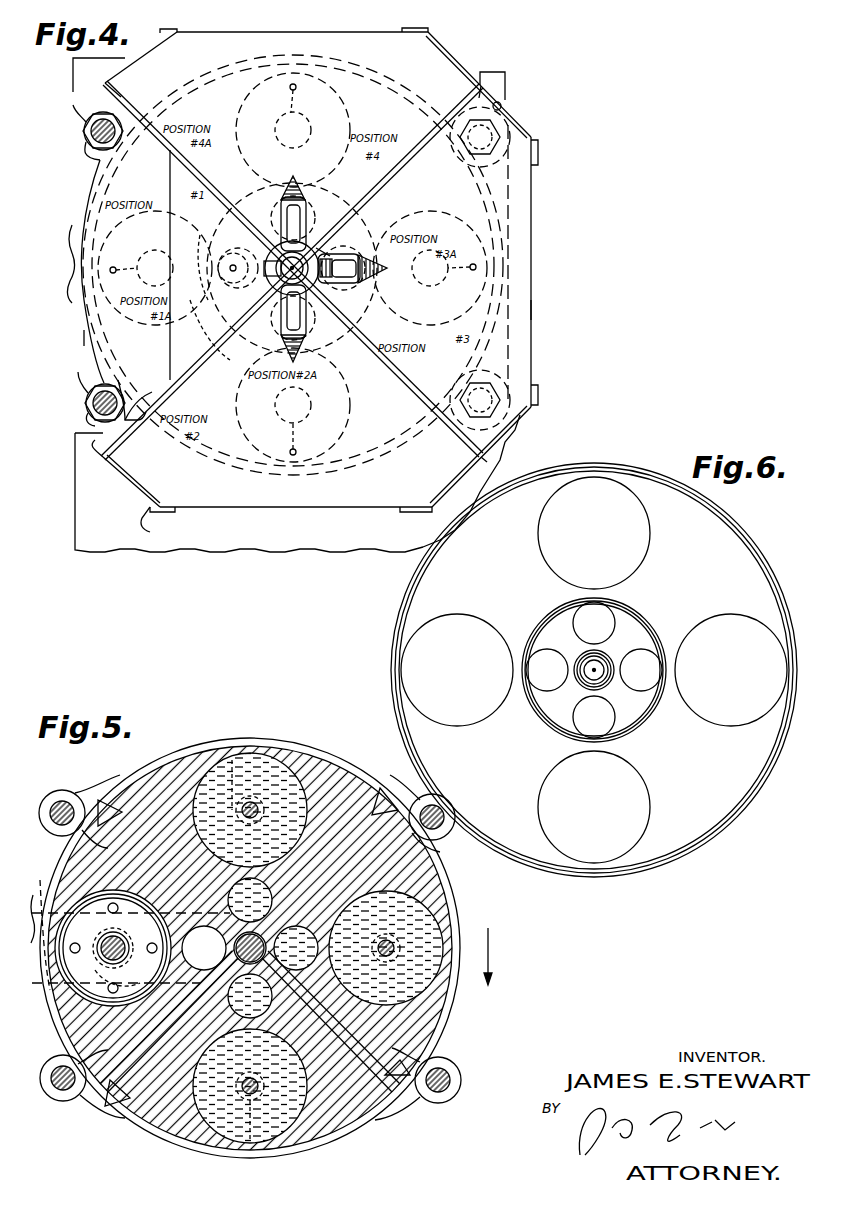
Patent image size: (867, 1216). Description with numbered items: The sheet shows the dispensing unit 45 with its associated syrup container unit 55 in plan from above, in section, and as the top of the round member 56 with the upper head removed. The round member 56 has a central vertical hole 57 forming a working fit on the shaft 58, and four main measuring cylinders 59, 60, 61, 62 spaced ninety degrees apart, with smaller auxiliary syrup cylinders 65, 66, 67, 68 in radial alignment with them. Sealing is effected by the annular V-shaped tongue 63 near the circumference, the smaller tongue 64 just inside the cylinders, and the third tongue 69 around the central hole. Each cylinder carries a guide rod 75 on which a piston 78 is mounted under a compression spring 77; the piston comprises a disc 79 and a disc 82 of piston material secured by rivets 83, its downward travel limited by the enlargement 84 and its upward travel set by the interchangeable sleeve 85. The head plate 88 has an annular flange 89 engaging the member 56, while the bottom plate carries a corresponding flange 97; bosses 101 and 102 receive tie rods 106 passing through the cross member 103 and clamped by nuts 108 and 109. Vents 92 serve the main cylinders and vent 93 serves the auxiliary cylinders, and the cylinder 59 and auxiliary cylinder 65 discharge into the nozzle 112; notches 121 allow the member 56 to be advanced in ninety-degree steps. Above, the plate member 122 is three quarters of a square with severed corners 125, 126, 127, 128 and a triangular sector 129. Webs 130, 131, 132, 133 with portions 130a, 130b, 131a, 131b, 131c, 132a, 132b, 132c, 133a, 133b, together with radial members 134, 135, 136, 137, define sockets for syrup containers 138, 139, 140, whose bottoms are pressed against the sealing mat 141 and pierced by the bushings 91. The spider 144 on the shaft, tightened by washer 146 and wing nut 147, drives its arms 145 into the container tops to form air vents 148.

In FIG. 4, the dispensing unit 45 is at (82, 338).
In FIG. 5, the dispensing unit 45 is at (462, 995).
In FIG. 4, the syrup container unit 55 is at (533, 312).
In FIG. 4, the round member 56 is at (230, 50).
In FIG. 6, the round member 56 is at (410, 603).
In FIG. 5, the round member 56 is at (190, 750).
In FIG. 4, the central vertical hole 57 is at (292, 268).
In FIG. 6, the central vertical hole 57 is at (601, 666).
In FIG. 5, the central vertical hole 57 is at (250, 948).
In FIG. 4, the shaft 58 is at (282, 220).
In FIG. 5, the shaft 58 is at (392, 1095).
In FIG. 4, the main measuring cylinder 59 is at (148, 330).
In FIG. 6, the main measuring cylinder 59 is at (463, 725).
In FIG. 5, the main measuring cylinder 59 is at (75, 898).
In FIG. 4, the main measuring cylinder 60 is at (350, 416).
In FIG. 6, the main measuring cylinder 60 is at (645, 828).
In FIG. 5, the main measuring cylinder 60 is at (275, 1130).
In FIG. 4, the main measuring cylinder 61 is at (445, 216).
In FIG. 6, the main measuring cylinder 61 is at (735, 725).
In FIG. 5, the main measuring cylinder 61 is at (425, 912).
In FIG. 4, the main measuring cylinder 62 is at (350, 120).
In FIG. 6, the main measuring cylinder 62 is at (649, 540).
In FIG. 5, the main measuring cylinder 62 is at (252, 800).
In FIG. 6, the annular V-shaped tongue 63 is at (618, 468).
In FIG. 6, the second annular V-shaped tongue 64 is at (560, 602).
In FIG. 4, the auxiliary syrup cylinder 65 is at (236, 248).
In FIG. 6, the auxiliary syrup cylinder 65 is at (540, 662).
In FIG. 5, the auxiliary syrup cylinder 65 is at (204, 948).
In FIG. 4, the auxiliary syrup cylinder 66 is at (268, 338).
In FIG. 6, the auxiliary syrup cylinder 66 is at (582, 725).
In FIG. 5, the auxiliary syrup cylinder 66 is at (262, 1012).
In FIG. 4, the auxiliary syrup cylinder 67 is at (345, 286).
In FIG. 6, the auxiliary syrup cylinder 67 is at (643, 692).
In FIG. 5, the auxiliary syrup cylinder 67 is at (318, 948).
In FIG. 4, the auxiliary syrup cylinder 68 is at (316, 210).
In FIG. 6, the auxiliary syrup cylinder 68 is at (607, 614).
In FIG. 5, the auxiliary syrup cylinder 68 is at (200, 860).
In FIG. 6, the third annular V-shaped tongue 69 is at (583, 681).
In FIG. 5, the guide rod 75 is at (252, 808).
In FIG. 5, the compression spring 77 is at (148, 984).
In FIG. 5, the piston 78 is at (113, 948).
In FIG. 5, the disc 79 is at (95, 998).
In FIG. 5, the disc of piston material 82 is at (140, 1000).
In FIG. 5, the rivets 83 is at (111, 948).
In FIG. 5, the enlargement 84 is at (232, 760).
In FIG. 5, the sleeve 85 is at (118, 940).
In FIG. 4, the head plate 88 is at (100, 190).
In FIG. 4, the annular flange 89 is at (82, 310).
In FIG. 4, the special bushings 91 is at (292, 255).
In FIG. 4, the vent 92 is at (293, 269).
In FIG. 4, the vent 93 is at (222, 300).
In FIG. 5, the annular flange 97 is at (150, 1138).
In FIG. 4, the bosses 101 is at (82, 148).
In FIG. 5, the bosses 102 is at (72, 800).
In FIG. 4, the cross member 103 is at (75, 552).
In FIG. 4, the tie rods 106 is at (92, 120).
In FIG. 5, the tie rods 106 is at (55, 803).
In FIG. 4, the nuts 108 is at (525, 180).
In FIG. 4, the nuts 109 is at (92, 130).
In FIG. 4, the discharge nozzle 112 is at (80, 225).
In FIG. 5, the discharge nozzle 112 is at (34, 910).
In FIG. 5, the notches 121 is at (105, 805).
In FIG. 4, the plate member 122 is at (150, 395).
In FIG. 4, the severed corner 125 is at (145, 515).
In FIG. 4, the severed corner 126 is at (515, 440).
In FIG. 4, the severed corner 127 is at (502, 102).
In FIG. 4, the severed corner 128 is at (118, 72).
In FIG. 4, the triangular sector 129 is at (172, 182).
In FIG. 4, the vertical web 130 is at (120, 488).
In FIG. 4, the radial portion 130a is at (97, 462).
In FIG. 4, the angular portion 130b is at (165, 512).
In FIG. 4, the vertical web 131 is at (452, 490).
In FIG. 4, the midpoint extension 131a is at (472, 458).
In FIG. 4, the angular portion 131b is at (410, 512).
In FIG. 4, the angular portion 131c is at (538, 395).
In FIG. 4, the web 132 is at (478, 70).
In FIG. 4, the midpoint radial extension 132a is at (470, 92).
In FIG. 4, the angular portion 132b is at (402, 30).
In FIG. 4, the angular extension 132c is at (538, 158).
In FIG. 4, the web 133 is at (140, 55).
In FIG. 4, the radial portion 133a is at (118, 90).
In FIG. 4, the angular portion 133b is at (160, 30).
In FIG. 4, the radial member 134 is at (280, 318).
In FIG. 4, the radial member 135 is at (308, 318).
In FIG. 4, the radial member 136 is at (330, 248).
In FIG. 4, the radial member 137 is at (263, 259).
In FIG. 4, the syrup container 138 is at (292, 507).
In FIG. 4, the syrup container 139 is at (531, 272).
In FIG. 4, the syrup container 140 is at (306, 32).
In FIG. 4, the sealing mat 141 is at (195, 350).
In FIG. 4, the spider 144 is at (362, 258).
In FIG. 4, the spider arms 145 is at (289, 178).
In FIG. 4, the washer 146 is at (310, 215).
In FIG. 4, the wing nut 147 is at (236, 280).
In FIG. 4, the air vents 148 is at (292, 176).